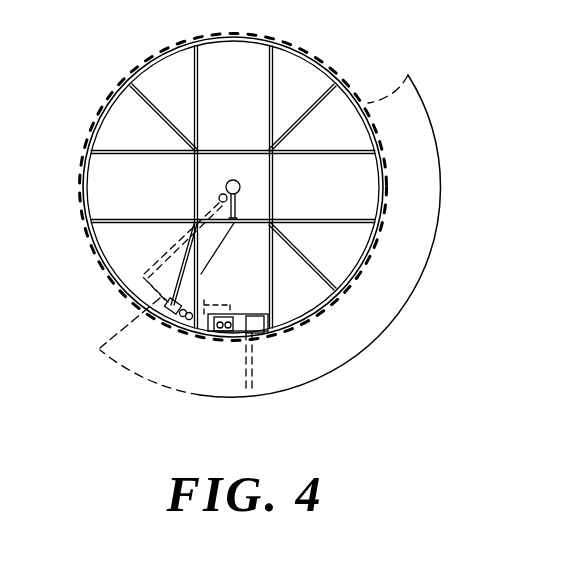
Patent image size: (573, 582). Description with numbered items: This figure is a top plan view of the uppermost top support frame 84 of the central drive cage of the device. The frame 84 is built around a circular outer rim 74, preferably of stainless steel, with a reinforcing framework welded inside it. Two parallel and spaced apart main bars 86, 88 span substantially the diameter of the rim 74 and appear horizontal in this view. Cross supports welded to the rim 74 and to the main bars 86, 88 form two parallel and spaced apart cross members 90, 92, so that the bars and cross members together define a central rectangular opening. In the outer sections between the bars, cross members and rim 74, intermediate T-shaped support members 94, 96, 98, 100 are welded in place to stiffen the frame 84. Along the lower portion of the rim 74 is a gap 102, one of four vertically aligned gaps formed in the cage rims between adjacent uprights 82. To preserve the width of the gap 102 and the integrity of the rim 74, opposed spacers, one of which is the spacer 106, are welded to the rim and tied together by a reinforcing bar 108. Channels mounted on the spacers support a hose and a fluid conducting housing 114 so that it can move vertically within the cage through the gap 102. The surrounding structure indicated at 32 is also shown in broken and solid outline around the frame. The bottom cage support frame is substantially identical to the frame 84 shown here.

The housing shell 32 is at (378, 305).
The outer rim 74 is at (82, 190).
The uprights 82 is at (377, 250).
The top support frame 84 is at (160, 58).
The main bar 86 is at (340, 155).
The main bar 88 is at (343, 225).
The cross member 90 is at (199, 67).
The cross member 92 is at (268, 103).
The T-shaped support member 94 is at (318, 106).
The T-shaped support member 96 is at (302, 267).
The T-shaped support member 98 is at (112, 282).
The T-shaped support member 100 is at (150, 100).
The gap 102 is at (243, 340).
The spacer 106 is at (280, 330).
The reinforcing bar 108 is at (238, 316).
The fluid conducting housing 114 is at (250, 318).